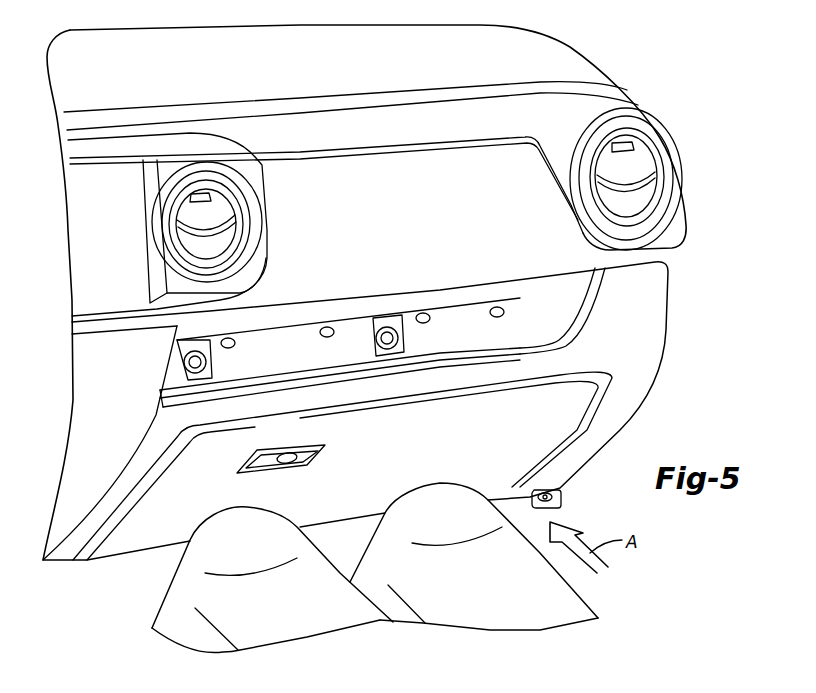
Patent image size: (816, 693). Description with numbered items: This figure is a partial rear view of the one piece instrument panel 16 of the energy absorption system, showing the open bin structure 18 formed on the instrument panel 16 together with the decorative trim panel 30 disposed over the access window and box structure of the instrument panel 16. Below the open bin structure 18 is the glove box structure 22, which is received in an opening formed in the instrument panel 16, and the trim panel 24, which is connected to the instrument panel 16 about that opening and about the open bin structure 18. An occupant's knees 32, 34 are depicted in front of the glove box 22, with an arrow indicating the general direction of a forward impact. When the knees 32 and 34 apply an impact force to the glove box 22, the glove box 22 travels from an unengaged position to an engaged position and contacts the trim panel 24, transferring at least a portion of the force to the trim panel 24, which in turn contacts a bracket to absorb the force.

The one piece instrument panel 16 is at (637, 97).
The open bin structure 18 is at (553, 318).
The glove box structure 22 is at (615, 420).
The trim panel 24 is at (637, 347).
The decorative trim panel 30 is at (407, 167).
The occupant's knee 32 is at (212, 550).
The occupant's knee 34 is at (440, 505).